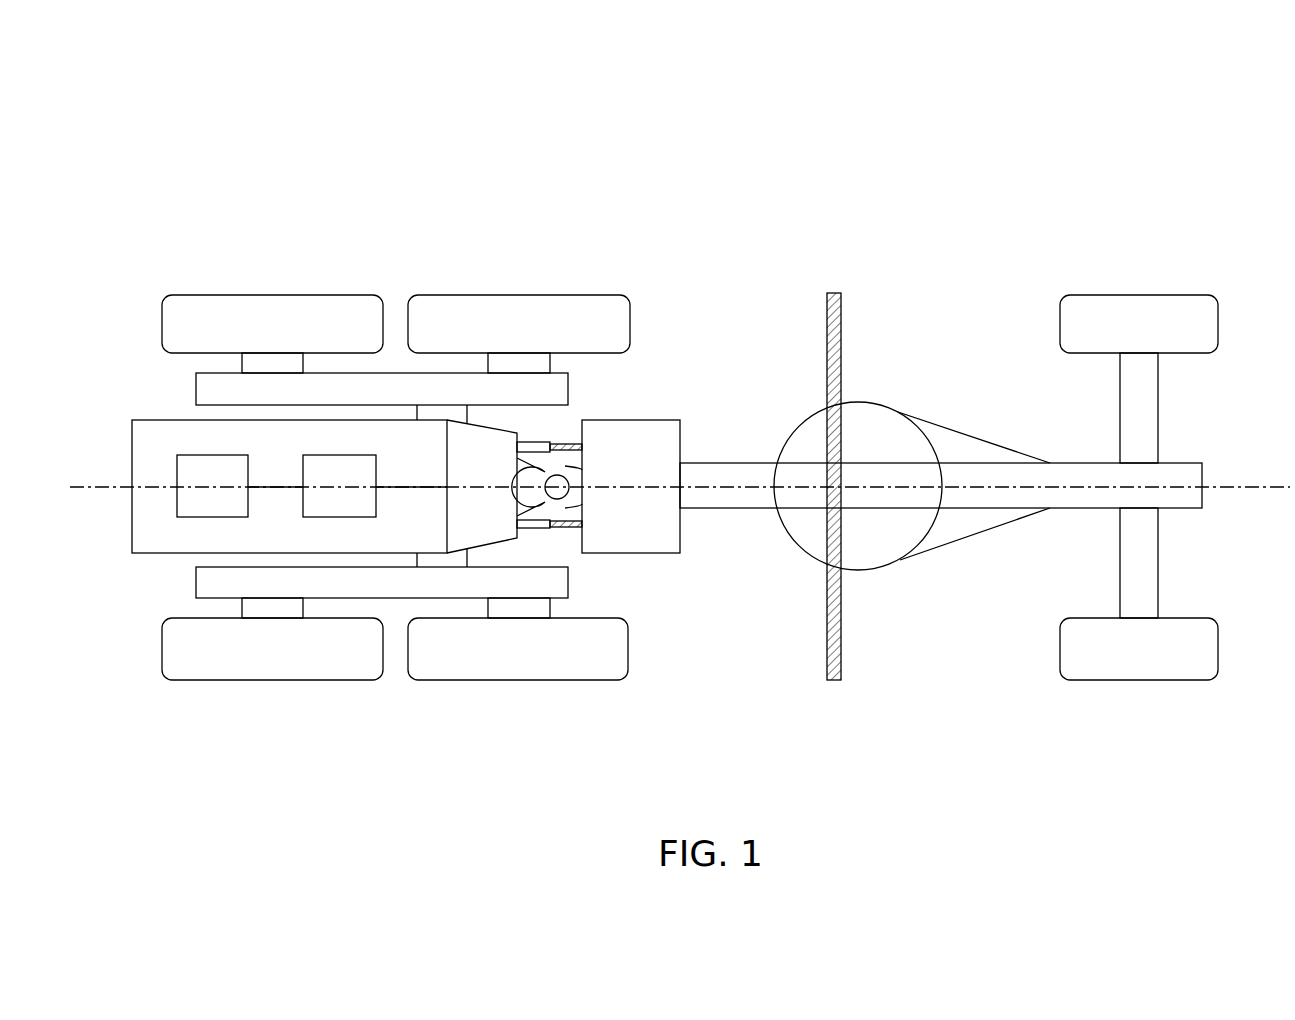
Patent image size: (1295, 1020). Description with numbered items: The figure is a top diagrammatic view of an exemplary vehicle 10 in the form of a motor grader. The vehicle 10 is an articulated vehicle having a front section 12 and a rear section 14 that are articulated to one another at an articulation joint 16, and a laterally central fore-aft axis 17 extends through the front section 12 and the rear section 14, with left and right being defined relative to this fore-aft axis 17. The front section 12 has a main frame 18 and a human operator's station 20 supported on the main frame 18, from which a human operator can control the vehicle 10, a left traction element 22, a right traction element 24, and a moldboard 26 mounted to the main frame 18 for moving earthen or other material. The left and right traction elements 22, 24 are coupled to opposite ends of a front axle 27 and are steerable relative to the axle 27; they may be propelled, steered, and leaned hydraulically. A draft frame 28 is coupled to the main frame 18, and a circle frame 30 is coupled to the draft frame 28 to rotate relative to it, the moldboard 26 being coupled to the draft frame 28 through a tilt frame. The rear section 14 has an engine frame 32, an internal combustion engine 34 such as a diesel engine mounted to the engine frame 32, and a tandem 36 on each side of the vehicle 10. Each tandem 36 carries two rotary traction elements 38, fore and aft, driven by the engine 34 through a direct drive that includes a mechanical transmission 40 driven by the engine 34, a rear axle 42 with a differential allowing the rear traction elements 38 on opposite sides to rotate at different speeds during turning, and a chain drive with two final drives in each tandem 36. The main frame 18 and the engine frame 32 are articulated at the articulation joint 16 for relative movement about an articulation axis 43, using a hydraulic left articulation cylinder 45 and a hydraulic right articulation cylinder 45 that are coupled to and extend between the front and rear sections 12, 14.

The vehicle 10 is at (226, 150).
The front section 12 is at (1050, 215).
The rear section 14 is at (540, 155).
The articulation joint 16 is at (568, 470).
The fore-aft axis 17 is at (1238, 492).
The main frame 18 is at (713, 462).
The human operator's station 20 is at (682, 543).
The left traction element 22 is at (1163, 294).
The right traction element 24 is at (1160, 682).
The moldboard 26 is at (841, 630).
The front axle 27 is at (1160, 425).
The draft frame 28 is at (945, 418).
The circle frame 30 is at (850, 569).
The engine frame 32 is at (530, 528).
The internal combustion engine 34 is at (193, 517).
The tandem 36 is at (365, 275).
The rotary traction element 38 is at (205, 294).
The mechanical transmission 40 is at (318, 517).
The rear axle 42 is at (448, 452).
The articulation axis 43 is at (572, 498).
The articulation cylinder 45 is at (535, 450).